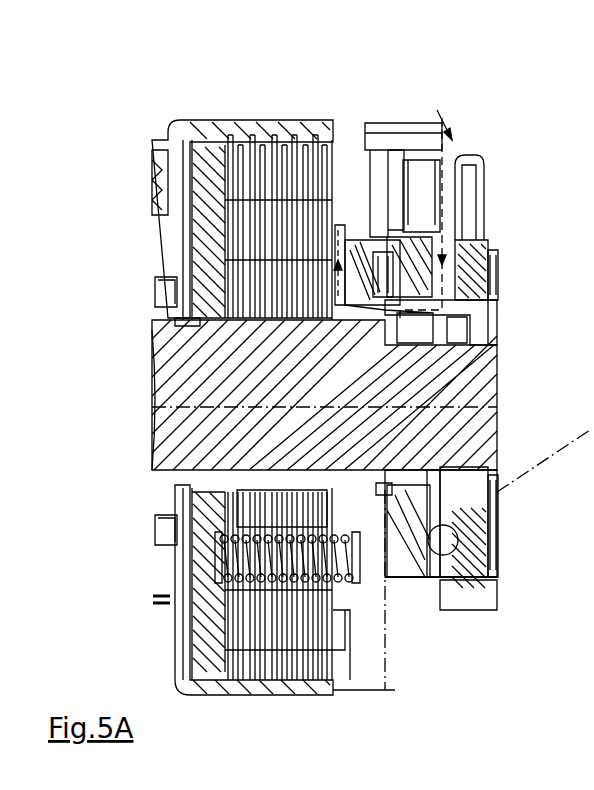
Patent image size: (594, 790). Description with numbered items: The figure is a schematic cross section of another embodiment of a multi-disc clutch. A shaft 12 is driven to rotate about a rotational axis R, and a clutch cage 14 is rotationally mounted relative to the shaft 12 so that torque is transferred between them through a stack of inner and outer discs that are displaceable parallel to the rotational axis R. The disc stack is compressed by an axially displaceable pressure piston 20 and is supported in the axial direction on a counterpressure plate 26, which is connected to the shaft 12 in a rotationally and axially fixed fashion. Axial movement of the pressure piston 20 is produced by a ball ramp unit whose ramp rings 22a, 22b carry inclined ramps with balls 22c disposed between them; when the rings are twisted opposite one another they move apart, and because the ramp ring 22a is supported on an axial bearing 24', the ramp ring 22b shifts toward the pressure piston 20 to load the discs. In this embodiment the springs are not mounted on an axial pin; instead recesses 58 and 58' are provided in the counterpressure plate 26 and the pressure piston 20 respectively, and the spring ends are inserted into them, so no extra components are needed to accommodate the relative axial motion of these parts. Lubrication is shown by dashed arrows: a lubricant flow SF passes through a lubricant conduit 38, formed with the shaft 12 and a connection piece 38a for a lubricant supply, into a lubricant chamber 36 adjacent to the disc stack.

The shaft 12 is at (468, 374).
The clutch cage 14 is at (196, 120).
The pressure piston 20 is at (346, 650).
The ramp ring 22a is at (482, 238).
The ramp ring 22b is at (416, 562).
The balls 22c is at (436, 590).
The axial bearing 24' is at (528, 272).
The counterpressure plate 26 is at (196, 228).
The lubricant chamber 36 is at (340, 228).
The lubricant conduit 38 is at (455, 312).
The connection piece 38a is at (480, 190).
The recess 58 is at (216, 557).
The recess 58' is at (397, 615).
The rotational axis R is at (180, 405).
The lubricant flow SF is at (428, 112).